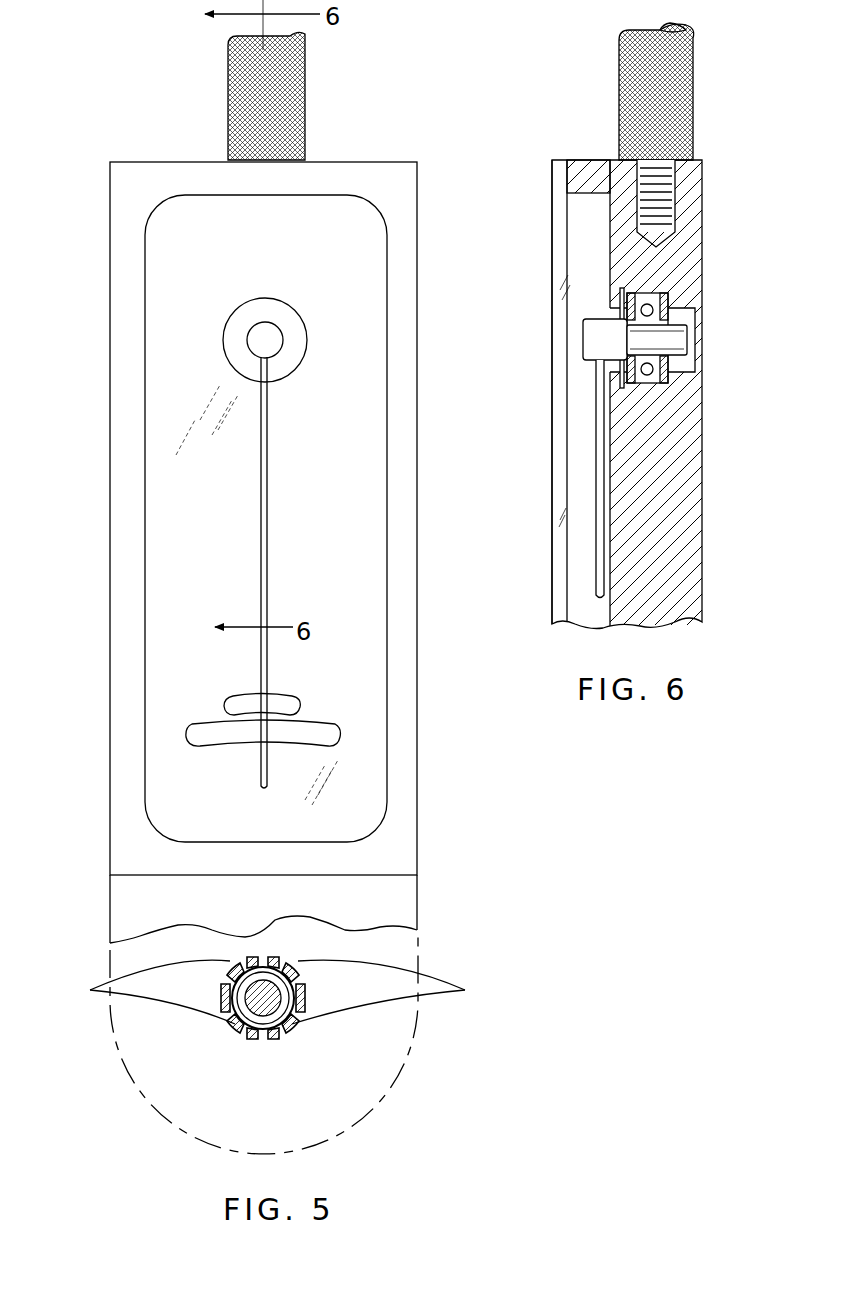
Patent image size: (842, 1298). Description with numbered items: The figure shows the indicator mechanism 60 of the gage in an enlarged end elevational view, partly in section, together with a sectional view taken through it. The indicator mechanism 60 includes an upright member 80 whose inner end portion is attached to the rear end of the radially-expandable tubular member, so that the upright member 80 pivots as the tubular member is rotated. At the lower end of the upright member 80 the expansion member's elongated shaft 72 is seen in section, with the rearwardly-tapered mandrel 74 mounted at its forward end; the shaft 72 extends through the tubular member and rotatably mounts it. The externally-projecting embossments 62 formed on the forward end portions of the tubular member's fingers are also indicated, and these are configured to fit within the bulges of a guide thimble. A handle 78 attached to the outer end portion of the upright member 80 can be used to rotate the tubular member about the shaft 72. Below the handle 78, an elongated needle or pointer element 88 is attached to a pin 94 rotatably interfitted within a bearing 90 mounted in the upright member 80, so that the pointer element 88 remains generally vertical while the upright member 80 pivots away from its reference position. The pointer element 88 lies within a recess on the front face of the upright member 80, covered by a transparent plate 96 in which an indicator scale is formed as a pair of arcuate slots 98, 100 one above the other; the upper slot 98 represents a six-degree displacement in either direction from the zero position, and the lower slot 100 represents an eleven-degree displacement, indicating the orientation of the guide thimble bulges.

In FIG. 5, the indicator mechanism 60 is at (109, 496).
In FIG. 6, the indicator mechanism 60 is at (708, 284).
In FIG. 5, the embossments 62 is at (281, 1044).
In FIG. 5, the shaft 72 is at (257, 1005).
In FIG. 5, the mandrel 74 is at (250, 965).
In FIG. 5, the handle 78 is at (228, 92).
In FIG. 6, the handle 78 is at (693, 97).
In FIG. 5, the upright member 80 is at (110, 321).
In FIG. 6, the upright member 80 is at (702, 240).
In FIG. 5, the pointer element 88 is at (260, 556).
In FIG. 6, the pointer element 88 is at (596, 518).
In FIG. 6, the bearing 90 is at (647, 376).
In FIG. 6, the pin 94 is at (680, 338).
In FIG. 5, the transparent plate 96 is at (343, 513).
In FIG. 6, the transparent plate 96 is at (552, 456).
In FIG. 5, the upper slot 98 is at (282, 696).
In FIG. 5, the lower slot 100 is at (316, 725).